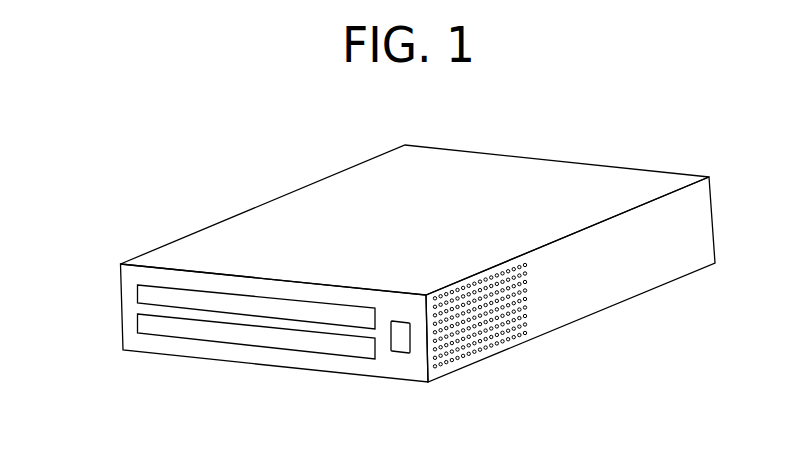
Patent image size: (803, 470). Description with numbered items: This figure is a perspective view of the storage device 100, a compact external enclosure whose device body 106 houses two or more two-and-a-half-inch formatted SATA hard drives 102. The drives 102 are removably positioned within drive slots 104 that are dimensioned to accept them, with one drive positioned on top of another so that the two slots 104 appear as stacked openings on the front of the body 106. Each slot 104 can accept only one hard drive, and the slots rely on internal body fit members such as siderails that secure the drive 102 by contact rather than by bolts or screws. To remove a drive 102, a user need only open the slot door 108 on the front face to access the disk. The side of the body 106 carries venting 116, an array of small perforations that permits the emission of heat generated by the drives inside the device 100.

The storage device 100 is at (158, 120).
The hard drive 102 is at (185, 297).
The drive slot 104 is at (136, 292).
The device body 106 is at (522, 192).
The slot door 108 is at (288, 337).
The venting 116 is at (530, 321).